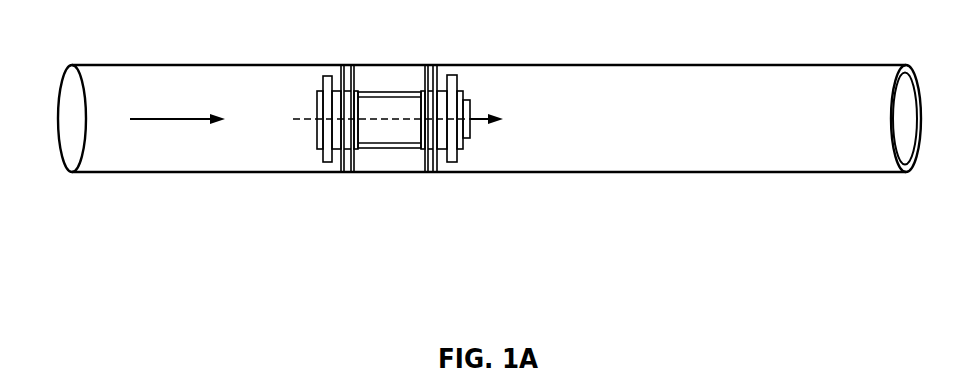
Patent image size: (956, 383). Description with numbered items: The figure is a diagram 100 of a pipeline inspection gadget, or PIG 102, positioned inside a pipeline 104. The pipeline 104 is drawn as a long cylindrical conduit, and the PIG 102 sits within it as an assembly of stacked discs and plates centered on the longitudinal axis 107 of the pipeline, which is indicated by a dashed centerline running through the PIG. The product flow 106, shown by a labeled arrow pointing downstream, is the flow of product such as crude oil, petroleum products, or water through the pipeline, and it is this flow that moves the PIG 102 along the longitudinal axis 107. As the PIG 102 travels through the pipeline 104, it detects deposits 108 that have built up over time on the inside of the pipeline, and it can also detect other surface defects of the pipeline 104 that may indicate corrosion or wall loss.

The diagram 100 is at (798, 48).
The PIG 102 is at (371, 105).
The pipeline 104 is at (193, 172).
The product flow 106 is at (202, 154).
The longitudinal axis 107 is at (307, 120).
The deposits 108 is at (620, 172).